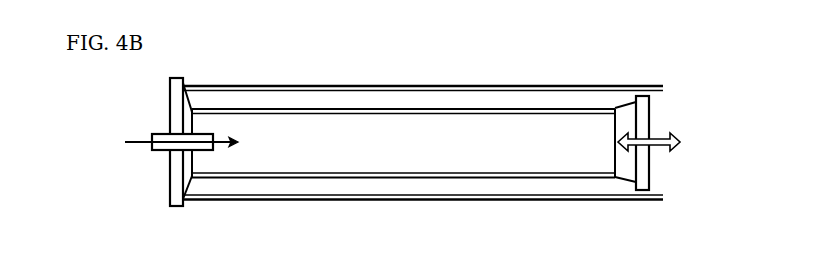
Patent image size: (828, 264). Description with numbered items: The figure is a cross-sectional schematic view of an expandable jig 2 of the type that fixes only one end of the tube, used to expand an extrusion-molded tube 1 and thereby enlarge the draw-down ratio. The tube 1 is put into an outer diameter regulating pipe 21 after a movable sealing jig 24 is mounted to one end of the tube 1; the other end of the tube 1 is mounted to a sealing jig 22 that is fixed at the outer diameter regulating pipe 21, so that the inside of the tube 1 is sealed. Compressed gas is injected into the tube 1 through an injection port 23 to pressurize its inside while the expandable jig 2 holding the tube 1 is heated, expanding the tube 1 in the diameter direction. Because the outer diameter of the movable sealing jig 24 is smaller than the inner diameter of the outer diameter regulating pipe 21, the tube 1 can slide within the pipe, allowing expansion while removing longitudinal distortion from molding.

The tube 1 is at (360, 130).
The expandable jig 2 is at (473, 82).
The outer diameter regulating pipe 21 is at (243, 87).
The sealing jig 22 is at (177, 173).
The injection port 23 is at (163, 142).
The movable sealing jig 24 is at (645, 115).